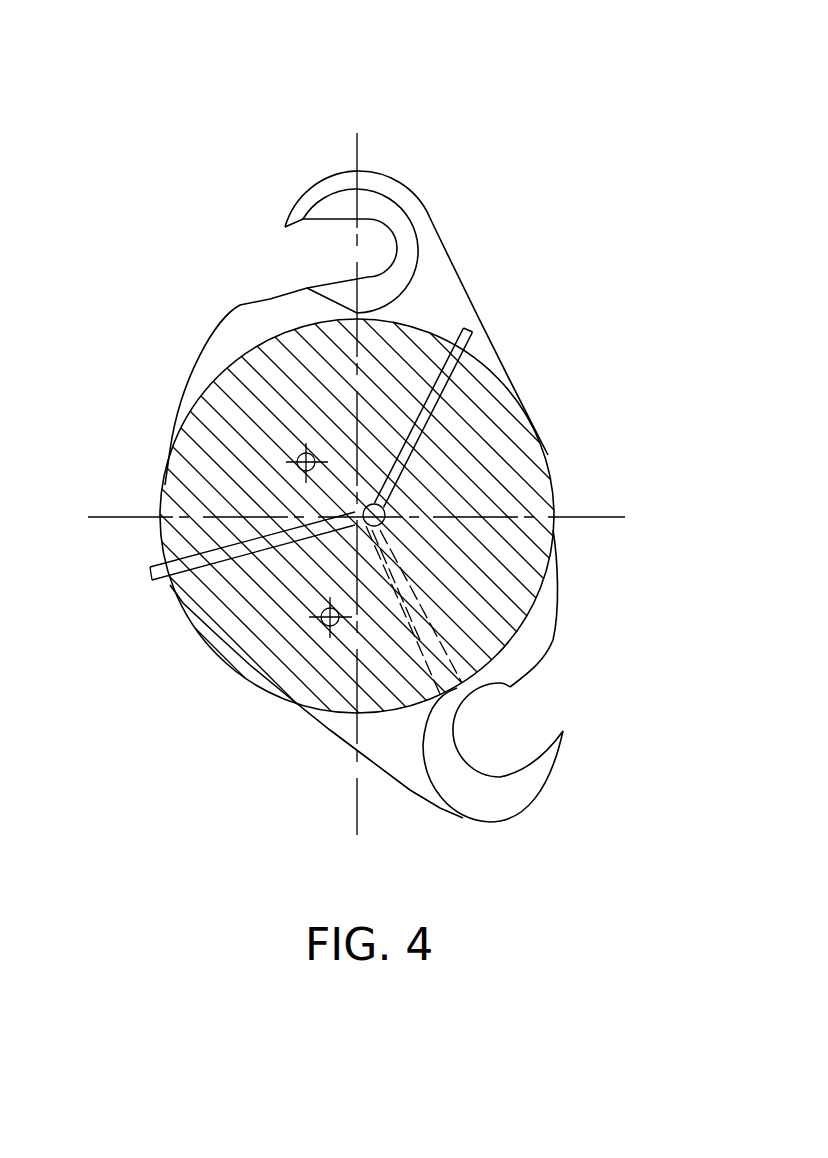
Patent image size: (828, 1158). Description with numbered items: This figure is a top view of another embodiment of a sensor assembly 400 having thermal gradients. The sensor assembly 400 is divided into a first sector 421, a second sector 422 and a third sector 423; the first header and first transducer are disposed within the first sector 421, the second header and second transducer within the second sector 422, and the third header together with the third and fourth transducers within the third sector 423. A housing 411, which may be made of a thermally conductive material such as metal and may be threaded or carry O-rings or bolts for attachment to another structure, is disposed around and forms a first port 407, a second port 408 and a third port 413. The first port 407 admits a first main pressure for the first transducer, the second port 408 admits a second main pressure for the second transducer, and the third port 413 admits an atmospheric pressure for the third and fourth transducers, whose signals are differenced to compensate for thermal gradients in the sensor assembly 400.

The sensor assembly 400 is at (396, 37).
The first port 407 is at (310, 618).
The second port 408 is at (296, 462).
The housing 411 is at (510, 424).
The third port 413 is at (470, 362).
The first sector 421 is at (232, 720).
The second sector 422 is at (172, 378).
The third sector 423 is at (603, 474).